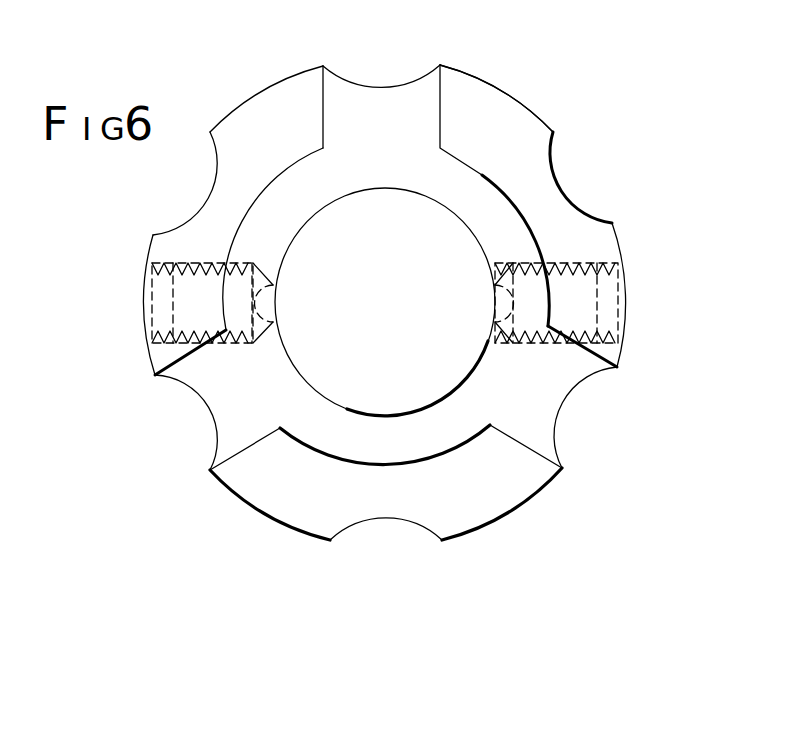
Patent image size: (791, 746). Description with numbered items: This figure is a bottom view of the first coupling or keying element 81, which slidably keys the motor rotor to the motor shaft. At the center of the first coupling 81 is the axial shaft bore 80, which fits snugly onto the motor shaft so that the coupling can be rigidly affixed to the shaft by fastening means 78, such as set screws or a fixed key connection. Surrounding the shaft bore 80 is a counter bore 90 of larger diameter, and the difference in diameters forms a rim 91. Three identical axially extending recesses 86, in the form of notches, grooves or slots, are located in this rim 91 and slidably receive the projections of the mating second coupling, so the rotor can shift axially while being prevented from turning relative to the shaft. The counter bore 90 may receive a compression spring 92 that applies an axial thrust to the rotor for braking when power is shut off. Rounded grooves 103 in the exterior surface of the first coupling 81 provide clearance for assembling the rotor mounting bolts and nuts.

The first coupling 81 is at (525, 102).
The fastening means 78 is at (165, 298).
The axial shaft bore 80 is at (472, 238).
The recess 86 is at (440, 97).
The counter bore 90 is at (482, 175).
The rim 91 is at (518, 153).
The compression spring 92 is at (475, 397).
The rounded grooves 103 is at (364, 86).